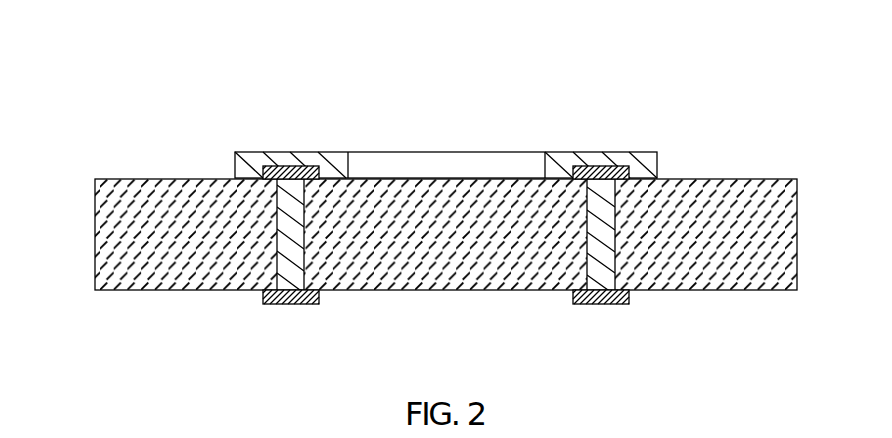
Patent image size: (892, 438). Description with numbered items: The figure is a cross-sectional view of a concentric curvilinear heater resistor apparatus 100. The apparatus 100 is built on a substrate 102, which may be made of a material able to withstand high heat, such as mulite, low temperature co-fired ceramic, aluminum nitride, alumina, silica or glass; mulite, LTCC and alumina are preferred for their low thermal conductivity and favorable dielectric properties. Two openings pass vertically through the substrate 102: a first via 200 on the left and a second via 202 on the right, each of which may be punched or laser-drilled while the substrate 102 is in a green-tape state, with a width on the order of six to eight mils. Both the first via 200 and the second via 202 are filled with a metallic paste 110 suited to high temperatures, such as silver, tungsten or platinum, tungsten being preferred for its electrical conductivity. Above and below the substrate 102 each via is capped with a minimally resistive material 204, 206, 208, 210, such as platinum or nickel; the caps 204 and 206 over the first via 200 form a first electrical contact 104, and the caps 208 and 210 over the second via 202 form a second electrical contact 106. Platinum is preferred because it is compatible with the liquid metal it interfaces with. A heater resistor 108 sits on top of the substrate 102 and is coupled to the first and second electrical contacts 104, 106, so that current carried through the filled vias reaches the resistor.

The concentric curvilinear heater resistor apparatus 100 is at (422, 201).
The substrate 102 is at (93, 243).
The first electrical contact 104 is at (252, 246).
The second electrical contact 106 is at (640, 243).
The heater resistor 108 is at (338, 152).
The metallic paste 110 is at (292, 250).
The first via 200 is at (306, 279).
The second via 202 is at (585, 262).
The minimally resistive material 204 is at (283, 168).
The minimally resistive material 206 is at (290, 305).
The minimally resistive material 208 is at (585, 168).
The minimally resistive material 210 is at (600, 305).